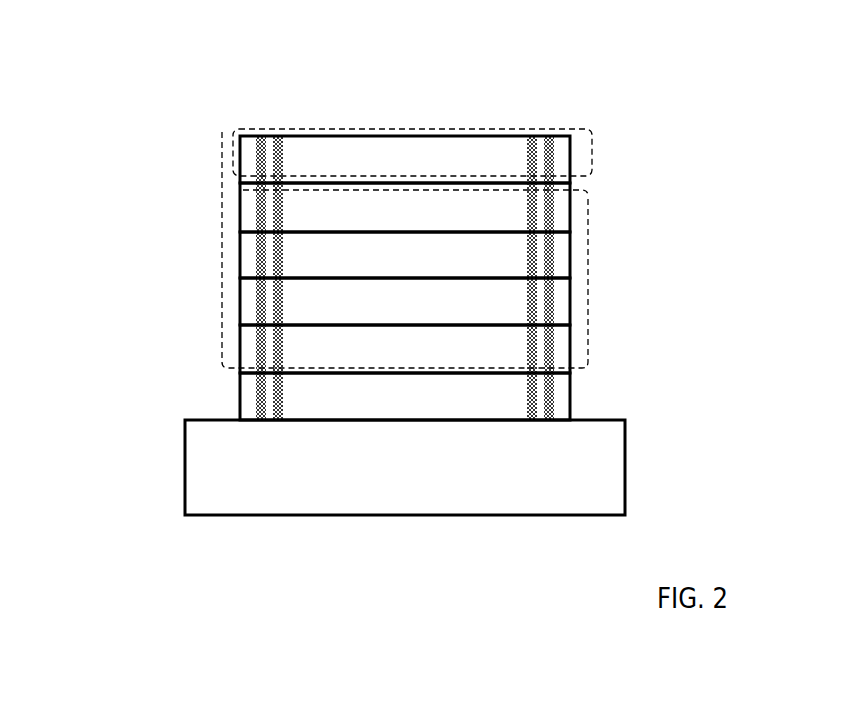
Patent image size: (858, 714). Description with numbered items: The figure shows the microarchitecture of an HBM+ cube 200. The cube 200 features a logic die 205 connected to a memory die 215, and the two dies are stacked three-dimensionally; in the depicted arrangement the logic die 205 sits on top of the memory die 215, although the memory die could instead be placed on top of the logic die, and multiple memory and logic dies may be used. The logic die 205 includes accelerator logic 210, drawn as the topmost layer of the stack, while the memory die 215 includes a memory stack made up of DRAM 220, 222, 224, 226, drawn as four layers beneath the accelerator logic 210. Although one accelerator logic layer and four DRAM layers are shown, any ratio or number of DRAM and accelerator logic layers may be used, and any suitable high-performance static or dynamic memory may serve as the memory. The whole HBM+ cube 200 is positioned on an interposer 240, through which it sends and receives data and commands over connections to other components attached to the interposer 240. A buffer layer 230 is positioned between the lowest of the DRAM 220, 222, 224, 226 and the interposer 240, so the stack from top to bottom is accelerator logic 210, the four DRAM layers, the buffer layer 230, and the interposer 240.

The HBM+ cube 200 is at (487, 271).
The logic die 205 is at (268, 131).
The accelerator logic 210 is at (244, 173).
The memory die 215 is at (394, 252).
The DRAM 220 is at (565, 214).
The DRAM 222 is at (241, 259).
The DRAM 224 is at (565, 300).
The DRAM 226 is at (240, 368).
The buffer layer 230 is at (572, 391).
The interposer 240 is at (618, 472).